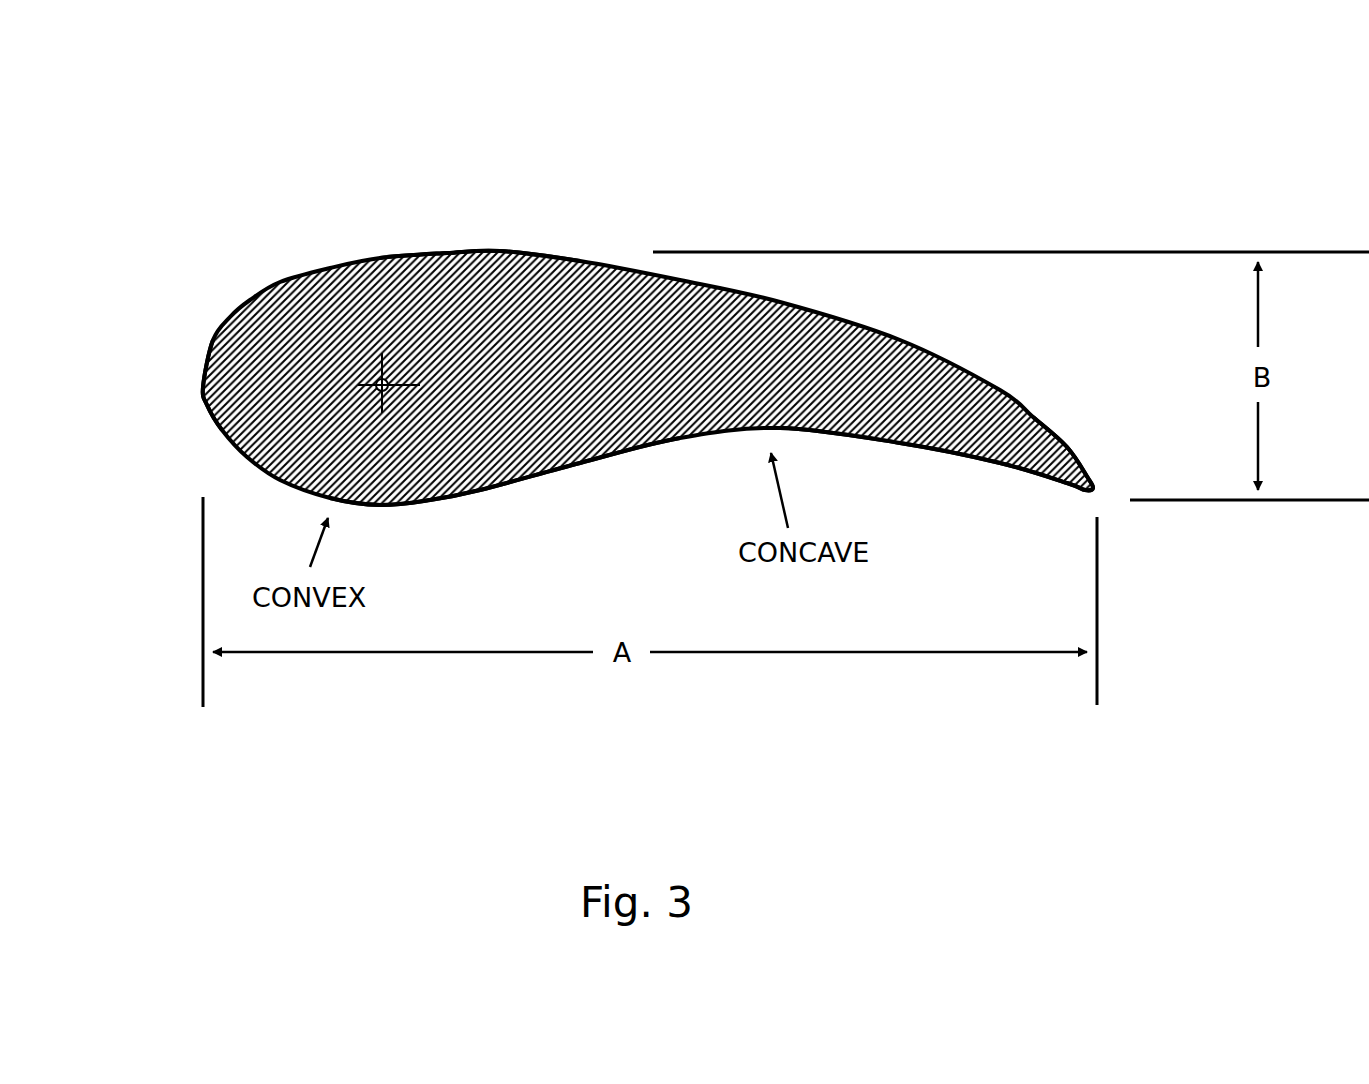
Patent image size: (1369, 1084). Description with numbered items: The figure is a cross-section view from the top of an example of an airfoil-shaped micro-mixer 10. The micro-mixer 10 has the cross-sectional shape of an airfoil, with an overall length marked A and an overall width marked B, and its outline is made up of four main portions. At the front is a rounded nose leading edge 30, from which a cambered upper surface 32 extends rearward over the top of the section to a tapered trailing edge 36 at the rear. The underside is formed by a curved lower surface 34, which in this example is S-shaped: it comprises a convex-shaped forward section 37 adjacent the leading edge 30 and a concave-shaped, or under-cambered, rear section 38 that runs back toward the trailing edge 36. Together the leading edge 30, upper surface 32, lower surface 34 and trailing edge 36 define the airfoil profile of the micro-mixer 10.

The airfoil-shaped micro-mixer 10 is at (540, 367).
The rounded nose leading edge 30 is at (188, 383).
The cambered upper surface 32 is at (458, 237).
The curved lower surface 34 is at (580, 493).
The tapered trailing edge 36 is at (1080, 400).
The convex-shaped forward section 37 is at (408, 512).
The concave-shaped rear section 38 is at (928, 460).